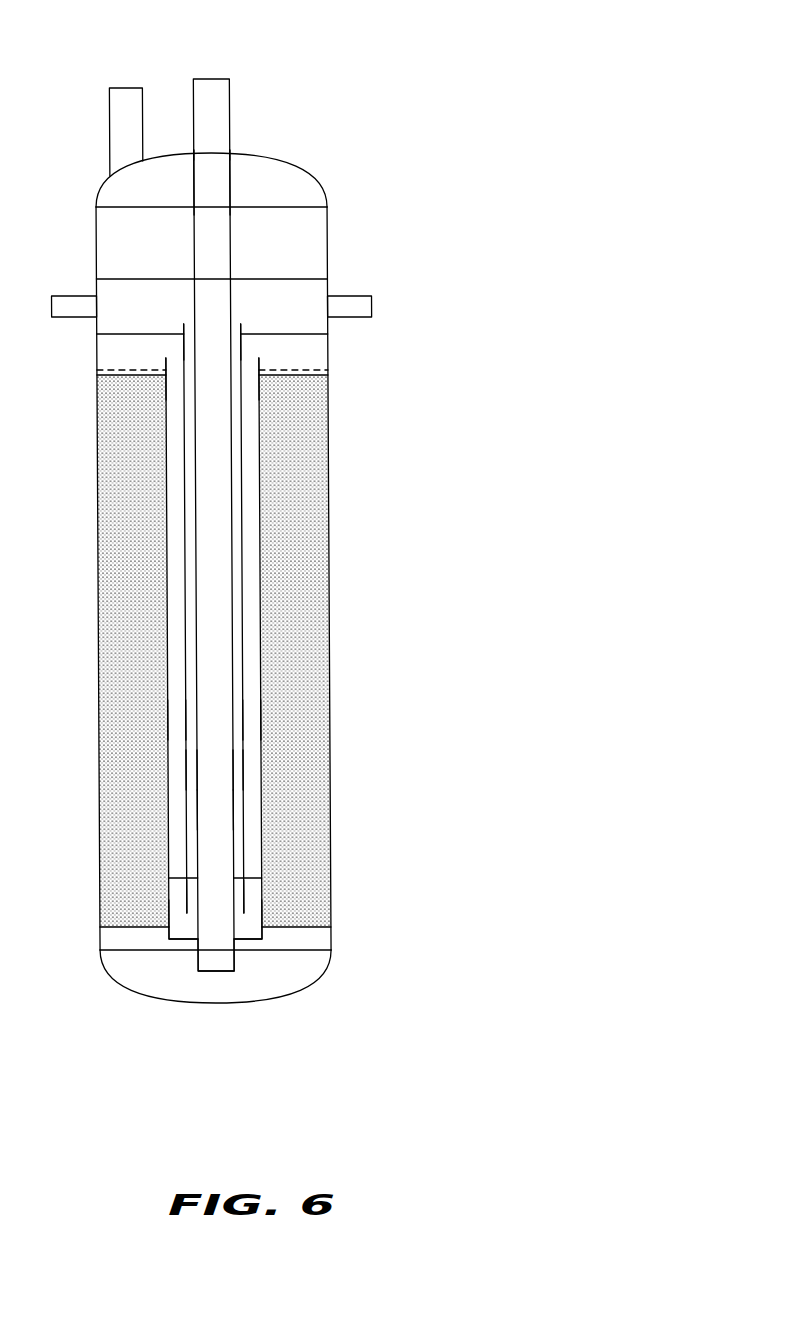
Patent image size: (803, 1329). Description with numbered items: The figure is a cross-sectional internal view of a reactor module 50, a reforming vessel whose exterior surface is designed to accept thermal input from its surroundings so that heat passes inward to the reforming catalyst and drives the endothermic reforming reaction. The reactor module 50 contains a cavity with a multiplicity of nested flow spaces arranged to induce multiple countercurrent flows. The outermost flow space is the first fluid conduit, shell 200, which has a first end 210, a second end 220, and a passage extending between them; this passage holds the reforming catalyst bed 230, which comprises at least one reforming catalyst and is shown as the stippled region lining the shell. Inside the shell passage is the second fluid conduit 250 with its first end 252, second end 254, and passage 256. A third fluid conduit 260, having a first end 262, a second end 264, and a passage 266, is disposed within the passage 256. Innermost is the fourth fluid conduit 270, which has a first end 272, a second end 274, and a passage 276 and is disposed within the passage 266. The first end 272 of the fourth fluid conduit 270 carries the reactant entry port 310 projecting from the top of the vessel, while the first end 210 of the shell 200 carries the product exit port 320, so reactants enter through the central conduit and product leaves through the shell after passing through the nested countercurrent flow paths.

The reactor module 50 is at (407, 92).
The shell 200 is at (345, 442).
The first end 210 is at (303, 173).
The second end 220 is at (330, 967).
The reforming catalyst bed 230 is at (320, 500).
The second fluid conduit 250 is at (260, 542).
The first end 252 is at (258, 359).
The second end 254 is at (265, 937).
The passage 256 is at (258, 725).
The third fluid conduit 260 is at (243, 600).
The first end 262 is at (239, 325).
The second end 264 is at (244, 910).
The passage 266 is at (240, 772).
The fourth fluid conduit 270 is at (232, 660).
The first end 272 is at (230, 170).
The second end 274 is at (230, 972).
The passage 276 is at (225, 807).
The reactant entry port 310 is at (215, 78).
The product exit port 320 is at (118, 87).